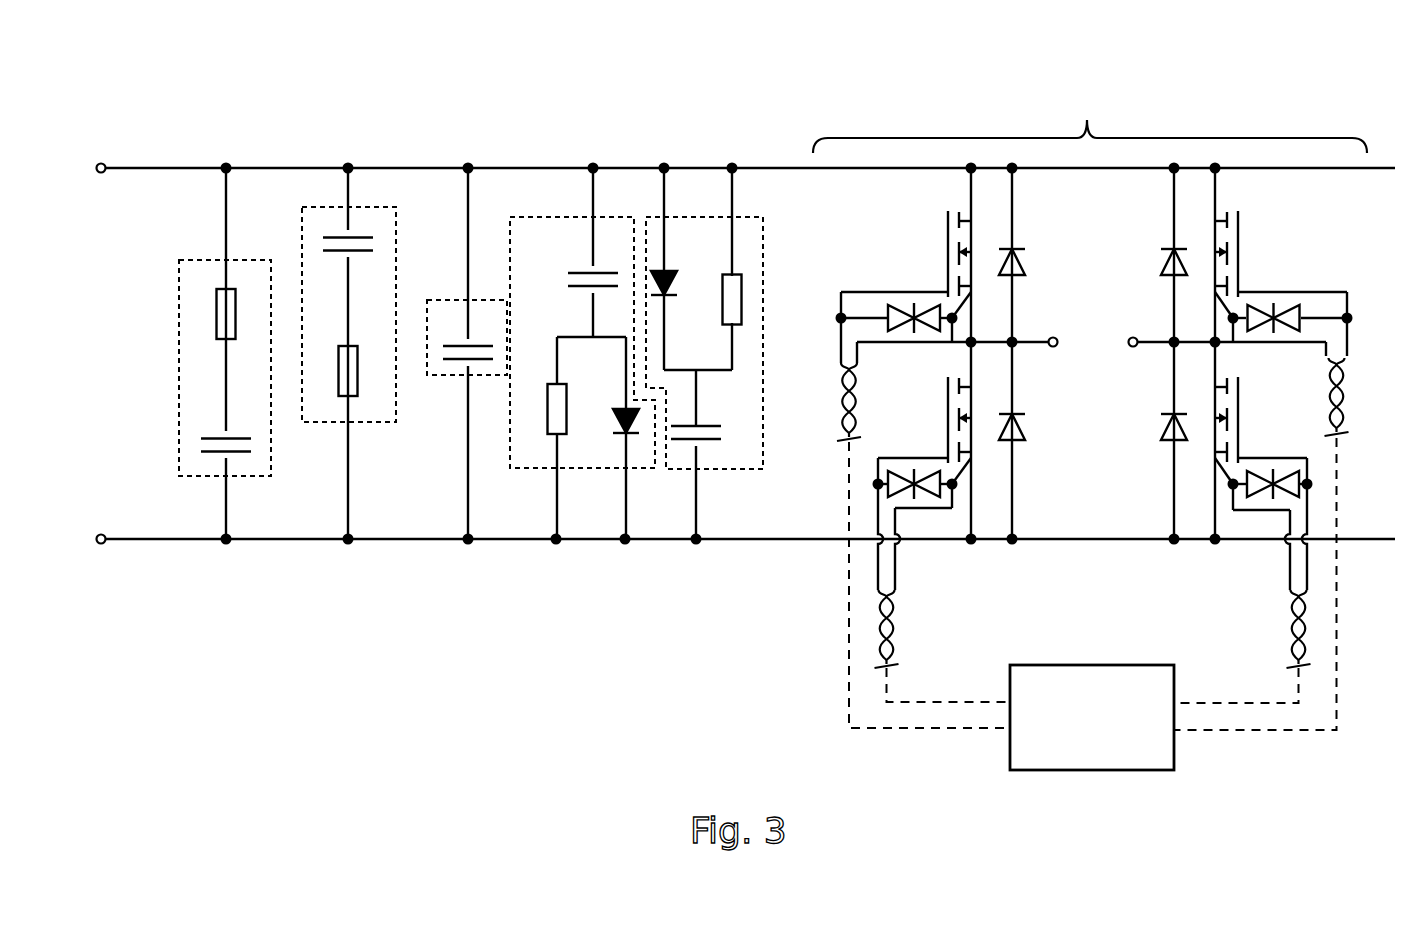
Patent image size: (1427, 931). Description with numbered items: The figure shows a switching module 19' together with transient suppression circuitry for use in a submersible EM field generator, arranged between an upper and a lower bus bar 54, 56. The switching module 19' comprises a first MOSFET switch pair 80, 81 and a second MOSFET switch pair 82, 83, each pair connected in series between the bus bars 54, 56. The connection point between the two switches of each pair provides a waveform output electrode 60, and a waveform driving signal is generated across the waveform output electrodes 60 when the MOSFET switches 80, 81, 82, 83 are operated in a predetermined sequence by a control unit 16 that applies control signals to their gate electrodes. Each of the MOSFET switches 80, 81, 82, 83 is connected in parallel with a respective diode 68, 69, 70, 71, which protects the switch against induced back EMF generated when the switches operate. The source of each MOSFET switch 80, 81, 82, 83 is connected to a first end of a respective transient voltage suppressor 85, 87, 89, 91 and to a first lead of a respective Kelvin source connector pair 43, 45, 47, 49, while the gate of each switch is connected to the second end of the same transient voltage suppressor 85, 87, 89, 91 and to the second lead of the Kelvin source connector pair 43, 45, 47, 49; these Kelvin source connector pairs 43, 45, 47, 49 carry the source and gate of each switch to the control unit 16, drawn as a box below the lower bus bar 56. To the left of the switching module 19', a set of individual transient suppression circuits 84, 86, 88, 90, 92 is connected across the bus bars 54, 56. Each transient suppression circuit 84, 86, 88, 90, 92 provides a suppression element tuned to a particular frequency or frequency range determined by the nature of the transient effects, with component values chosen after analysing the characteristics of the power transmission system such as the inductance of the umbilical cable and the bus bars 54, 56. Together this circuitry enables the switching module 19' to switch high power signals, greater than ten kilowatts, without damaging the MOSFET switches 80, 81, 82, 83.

The bus bar 54 is at (99, 163).
The bus bar 56 is at (99, 544).
The transient suppression circuit 84 is at (178, 412).
The transient suppression circuit 86 is at (341, 422).
The transient suppression circuit 88 is at (466, 375).
The transient suppression circuit 90 is at (519, 469).
The transient suppression circuit 92 is at (681, 469).
The switching module 19' is at (1090, 113).
The MOSFET switch 80 is at (948, 247).
The MOSFET switch 81 is at (948, 431).
The MOSFET switch 82 is at (1238, 250).
The MOSFET switch 83 is at (1238, 420).
The transient voltage suppressor 85 is at (903, 307).
The transient voltage suppressor 87 is at (878, 484).
The transient voltage suppressor 89 is at (1284, 305).
The transient voltage suppressor 91 is at (1298, 473).
The diode 68 is at (1026, 262).
The diode 69 is at (1026, 432).
The diode 70 is at (1162, 263).
The diode 71 is at (1162, 432).
The waveform output electrode 60 is at (1091, 331).
The Kelvin source connector pair 43 is at (841, 410).
The Kelvin source connector pair 45 is at (895, 634).
The Kelvin source connector pair 47 is at (1348, 408).
The Kelvin source connector pair 49 is at (1292, 635).
The control unit 16 is at (1109, 736).